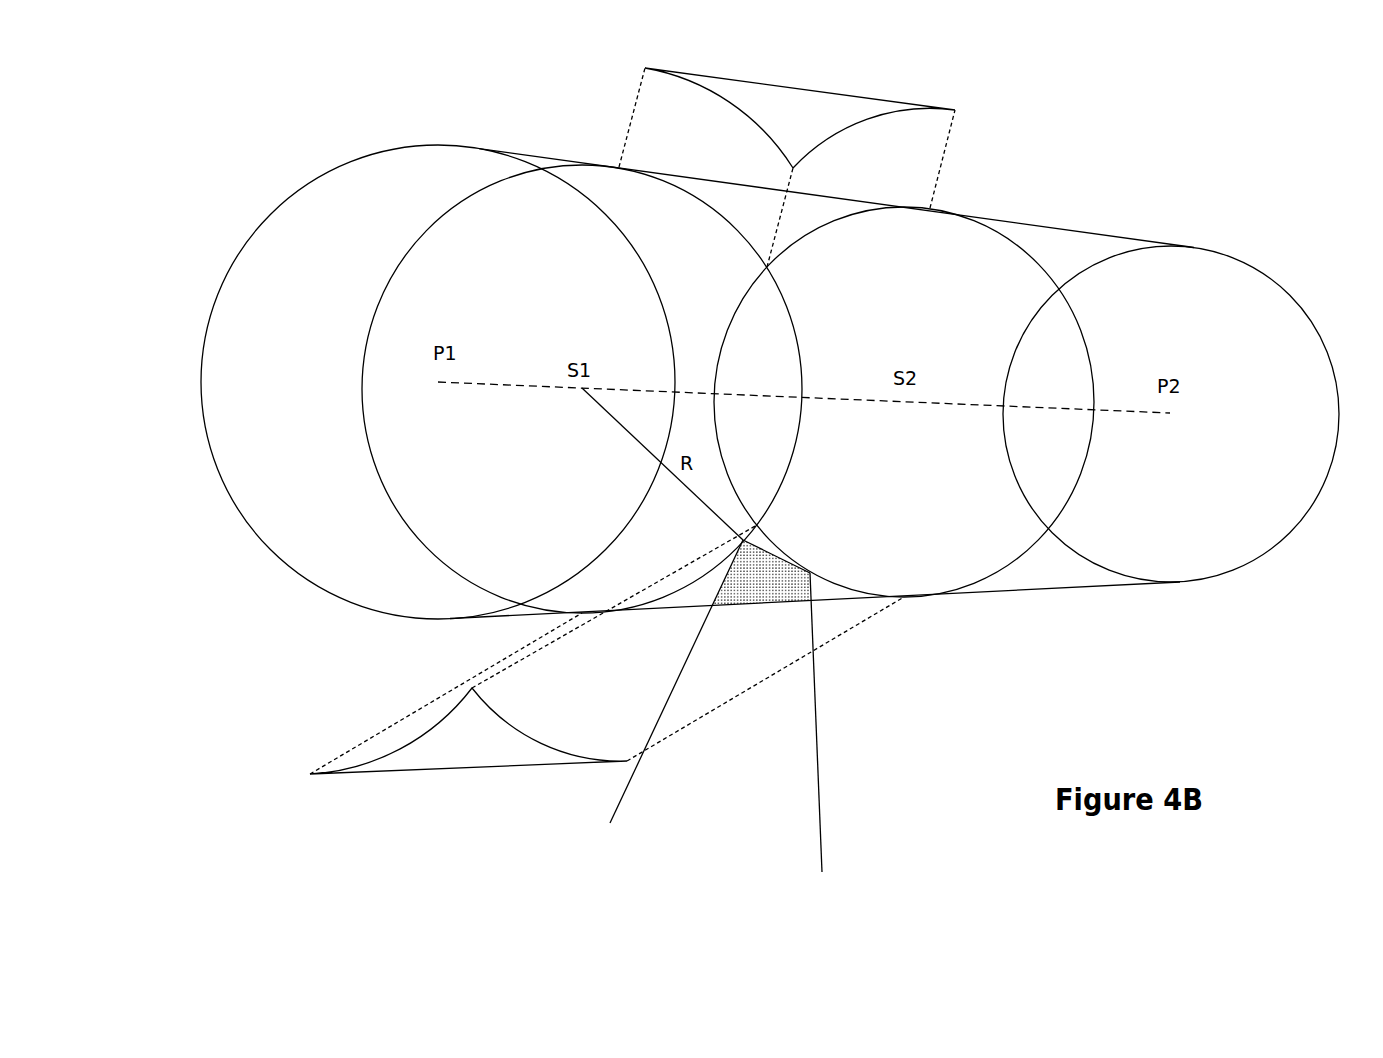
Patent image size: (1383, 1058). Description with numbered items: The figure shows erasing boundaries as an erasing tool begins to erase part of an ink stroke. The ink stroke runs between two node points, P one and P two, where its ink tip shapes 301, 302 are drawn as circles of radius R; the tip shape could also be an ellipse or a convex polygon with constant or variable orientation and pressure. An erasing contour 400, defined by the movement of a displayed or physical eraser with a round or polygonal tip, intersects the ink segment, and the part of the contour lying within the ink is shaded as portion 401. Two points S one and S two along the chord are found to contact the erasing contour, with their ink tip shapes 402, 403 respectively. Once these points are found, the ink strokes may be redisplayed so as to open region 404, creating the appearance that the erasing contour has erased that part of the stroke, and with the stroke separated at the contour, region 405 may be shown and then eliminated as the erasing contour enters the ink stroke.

The ink stroke tip shape 301 is at (367, 155).
The ink stroke tip shape 302 is at (1268, 275).
The erasing contour 400 is at (817, 697).
The shaded portion of erasing contour 401 is at (787, 588).
The ink tip shape at point S1 402 is at (560, 165).
The ink tip shape at point S2 403 is at (1027, 252).
The open region 404 is at (460, 768).
The region 405 is at (905, 102).